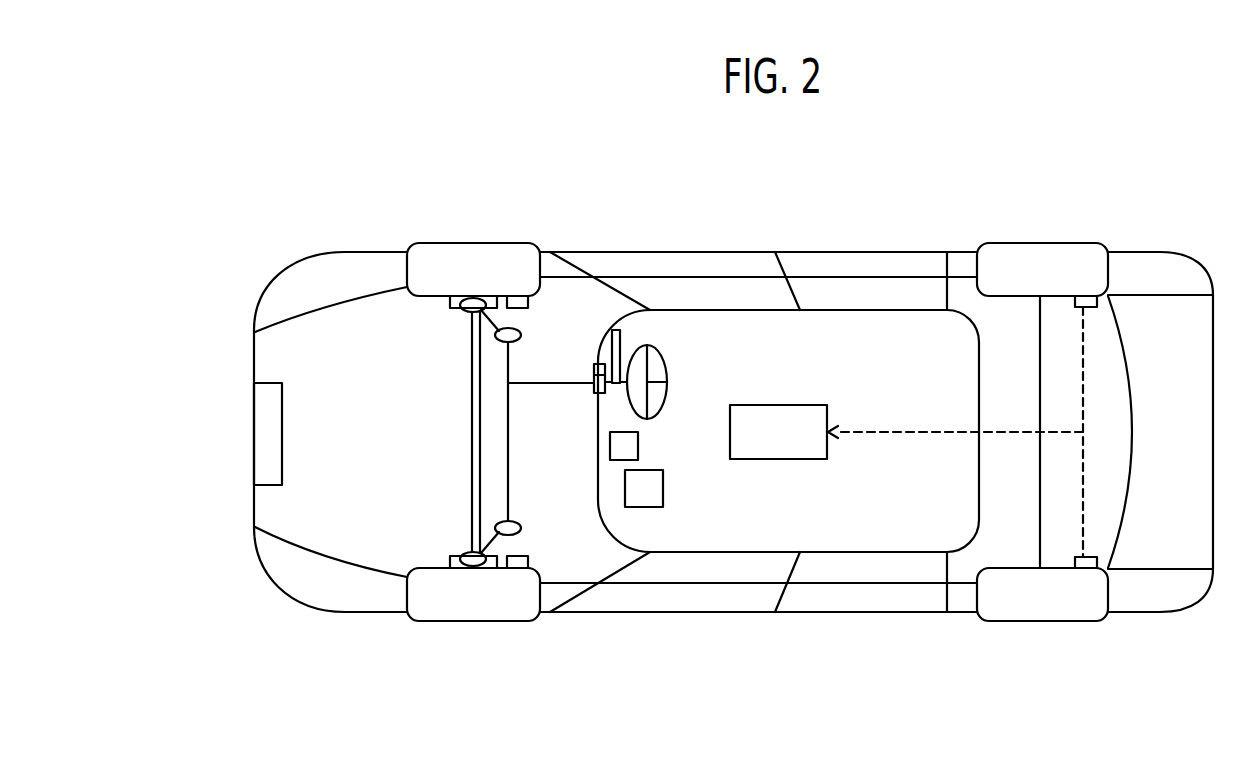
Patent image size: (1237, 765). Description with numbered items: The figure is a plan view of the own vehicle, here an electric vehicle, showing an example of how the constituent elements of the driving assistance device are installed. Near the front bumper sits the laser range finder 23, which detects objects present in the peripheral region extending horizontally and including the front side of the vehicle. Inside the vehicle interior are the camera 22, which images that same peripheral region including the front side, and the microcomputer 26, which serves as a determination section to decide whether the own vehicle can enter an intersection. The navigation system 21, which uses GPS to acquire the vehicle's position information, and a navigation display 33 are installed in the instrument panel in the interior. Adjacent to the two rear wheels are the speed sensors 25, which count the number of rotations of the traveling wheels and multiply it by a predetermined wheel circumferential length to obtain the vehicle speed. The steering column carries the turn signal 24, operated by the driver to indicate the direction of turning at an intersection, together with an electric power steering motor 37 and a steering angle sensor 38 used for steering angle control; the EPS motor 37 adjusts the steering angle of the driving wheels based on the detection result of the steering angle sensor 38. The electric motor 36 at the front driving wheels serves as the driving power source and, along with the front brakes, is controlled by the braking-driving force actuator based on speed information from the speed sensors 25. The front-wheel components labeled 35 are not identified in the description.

The navigation system 21 is at (692, 488).
The camera 22 is at (640, 446).
The laser range finder 23 is at (263, 438).
The turn signal 24 is at (621, 336).
The speed sensors 25 is at (1086, 296).
The microcomputer 26 is at (805, 447).
The navigation display 33 is at (650, 487).
The front wheel speed sensor 35 is at (518, 296).
The electric motor 36 is at (458, 296).
The electric power steering motor 37 is at (595, 393).
The steering angle sensor 38 is at (596, 365).